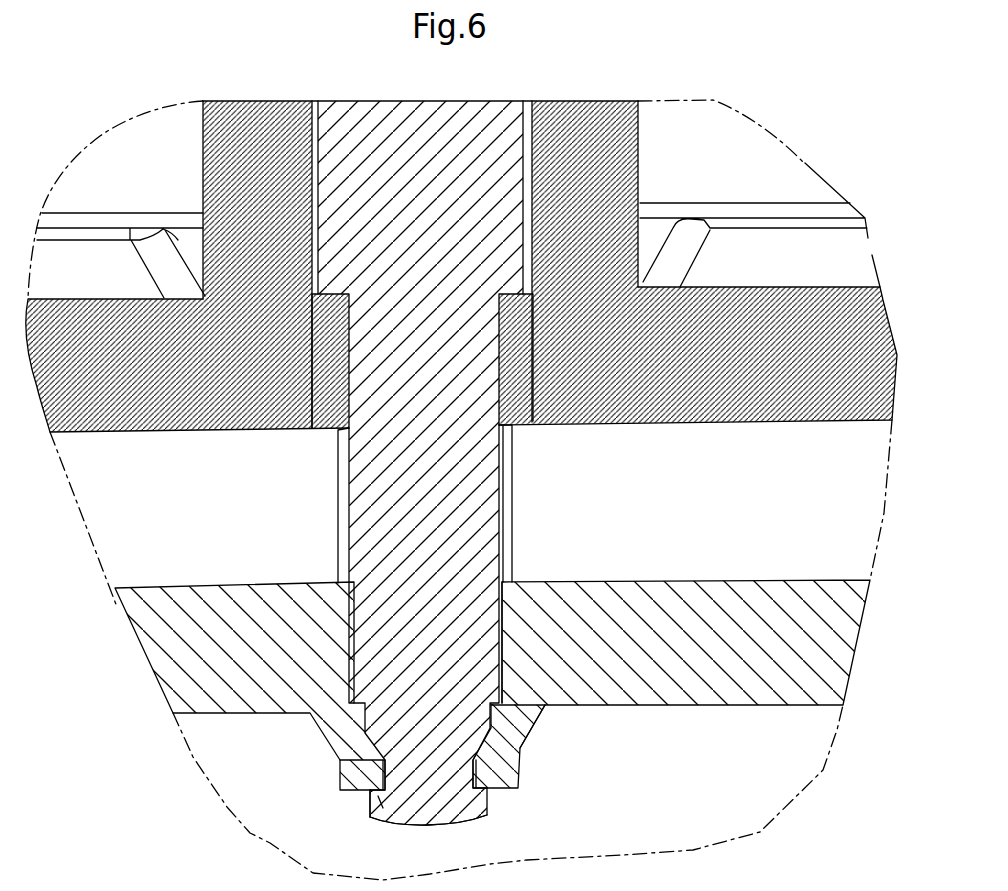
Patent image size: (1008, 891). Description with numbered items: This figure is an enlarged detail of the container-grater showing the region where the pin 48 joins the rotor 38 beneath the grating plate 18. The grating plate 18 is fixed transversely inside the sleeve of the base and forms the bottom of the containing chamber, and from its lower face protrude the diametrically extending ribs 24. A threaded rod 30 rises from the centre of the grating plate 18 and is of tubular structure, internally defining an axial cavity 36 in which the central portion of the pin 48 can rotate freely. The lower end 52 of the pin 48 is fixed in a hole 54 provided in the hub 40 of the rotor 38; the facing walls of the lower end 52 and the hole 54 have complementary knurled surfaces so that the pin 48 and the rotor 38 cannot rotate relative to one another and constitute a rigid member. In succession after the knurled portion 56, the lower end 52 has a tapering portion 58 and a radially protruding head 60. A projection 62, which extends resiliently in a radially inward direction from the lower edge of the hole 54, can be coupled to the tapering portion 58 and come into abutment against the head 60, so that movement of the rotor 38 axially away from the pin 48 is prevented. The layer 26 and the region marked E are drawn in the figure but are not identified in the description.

The grating plate 18 is at (827, 300).
The rib 24 is at (207, 500).
The melt channel layer 26 is at (773, 207).
The threaded rod 30 is at (605, 127).
The cavity 36 is at (314, 130).
The rotor 38 is at (778, 706).
The hub 40 is at (307, 713).
The pin 48 is at (486, 167).
The lower end 52 is at (428, 843).
The hole 54 is at (503, 625).
The knurled portion 56 is at (380, 800).
The tapering portion 58 is at (338, 760).
The head 60 is at (380, 807).
The projection 62 is at (507, 773).
The insert piece E is at (519, 736).